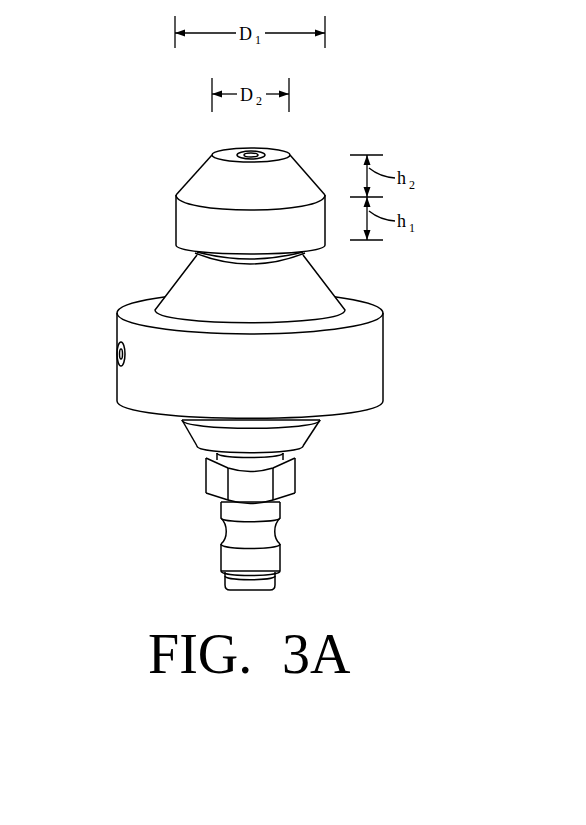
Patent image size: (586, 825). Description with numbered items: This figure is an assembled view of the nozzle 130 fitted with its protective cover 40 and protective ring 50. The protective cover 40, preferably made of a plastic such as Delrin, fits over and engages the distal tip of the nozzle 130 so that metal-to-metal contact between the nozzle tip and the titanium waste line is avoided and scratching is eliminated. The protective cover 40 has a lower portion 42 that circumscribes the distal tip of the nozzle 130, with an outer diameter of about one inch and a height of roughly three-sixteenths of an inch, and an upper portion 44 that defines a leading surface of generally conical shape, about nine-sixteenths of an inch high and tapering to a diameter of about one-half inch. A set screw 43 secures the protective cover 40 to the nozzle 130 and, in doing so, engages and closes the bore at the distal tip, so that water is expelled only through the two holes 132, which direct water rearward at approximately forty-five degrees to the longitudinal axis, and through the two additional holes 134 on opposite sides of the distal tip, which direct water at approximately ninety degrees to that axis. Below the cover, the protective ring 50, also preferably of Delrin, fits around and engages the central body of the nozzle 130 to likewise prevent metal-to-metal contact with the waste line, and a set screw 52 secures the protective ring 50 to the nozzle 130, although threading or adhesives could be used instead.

The nozzle 130 is at (114, 122).
The protective cover 40 is at (260, 169).
The lower portion 42 is at (185, 222).
The set screw 43 is at (250, 155).
The upper portion 44 is at (207, 157).
The protective ring 50 is at (376, 393).
The set screw 52 is at (118, 356).
The holes 132 is at (312, 272).
The additional holes 134 is at (196, 256).